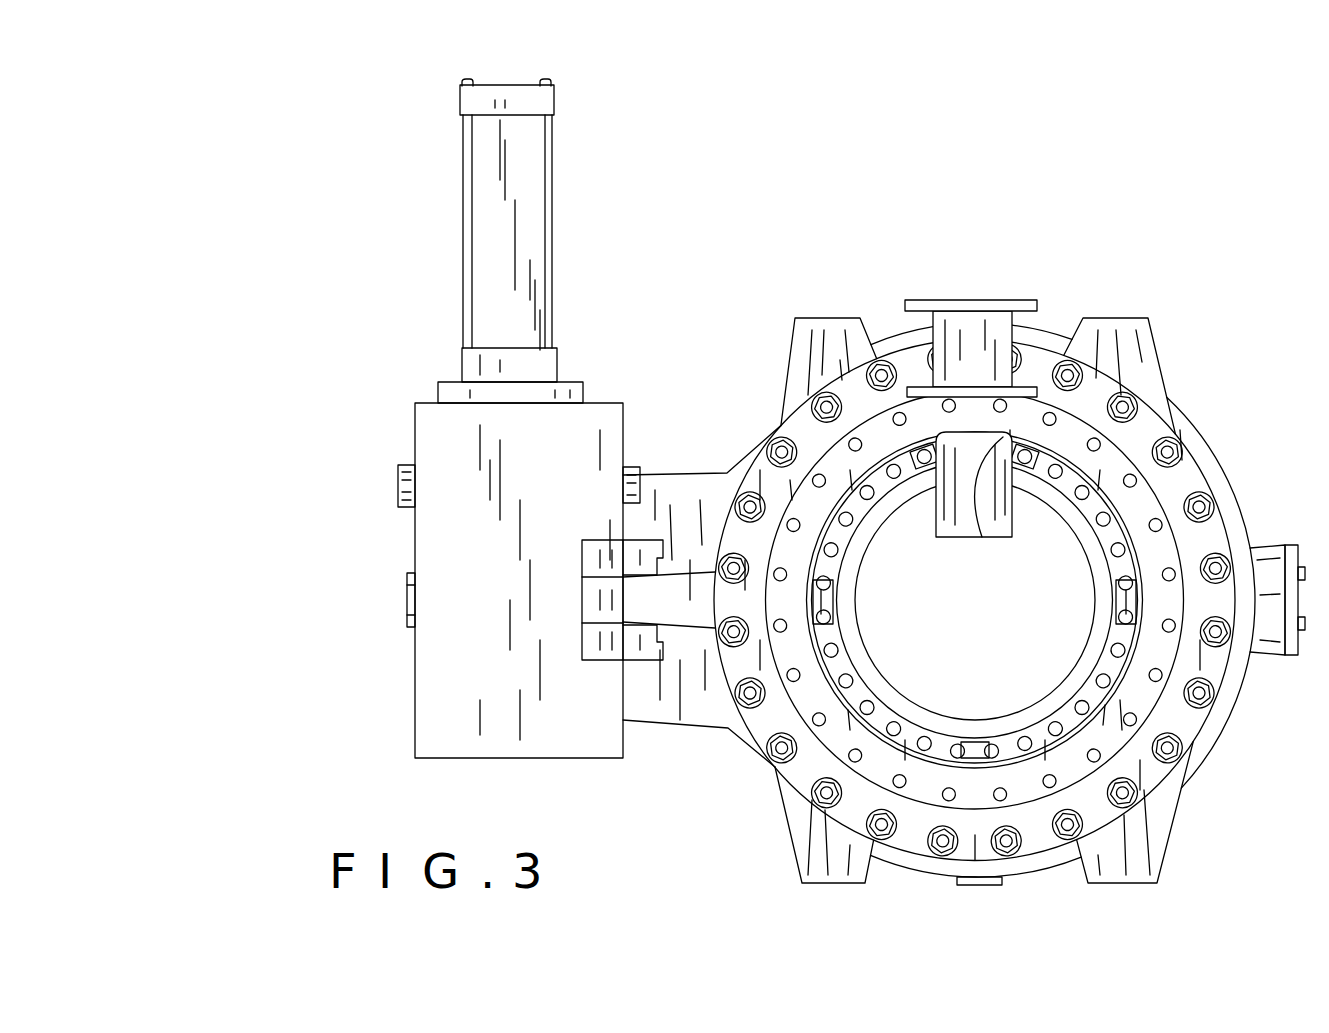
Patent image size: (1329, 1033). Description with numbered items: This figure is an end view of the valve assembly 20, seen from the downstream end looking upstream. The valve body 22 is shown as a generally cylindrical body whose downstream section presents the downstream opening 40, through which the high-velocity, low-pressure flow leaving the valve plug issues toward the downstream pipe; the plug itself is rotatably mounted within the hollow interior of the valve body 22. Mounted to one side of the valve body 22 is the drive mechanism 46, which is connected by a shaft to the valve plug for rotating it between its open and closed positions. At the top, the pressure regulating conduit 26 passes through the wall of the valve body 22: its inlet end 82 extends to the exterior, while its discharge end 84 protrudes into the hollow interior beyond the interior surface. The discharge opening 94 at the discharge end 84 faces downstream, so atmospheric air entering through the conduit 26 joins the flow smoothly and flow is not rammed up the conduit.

The valve assembly 20 is at (967, 558).
The valve body 22 is at (1228, 455).
The pressure regulating conduit 26 is at (953, 298).
The downstream opening 40 is at (1095, 552).
The drive mechanism 46 is at (630, 425).
The inlet end 82 is at (990, 340).
The discharge end 84 is at (935, 513).
The discharge opening 94 is at (983, 537).